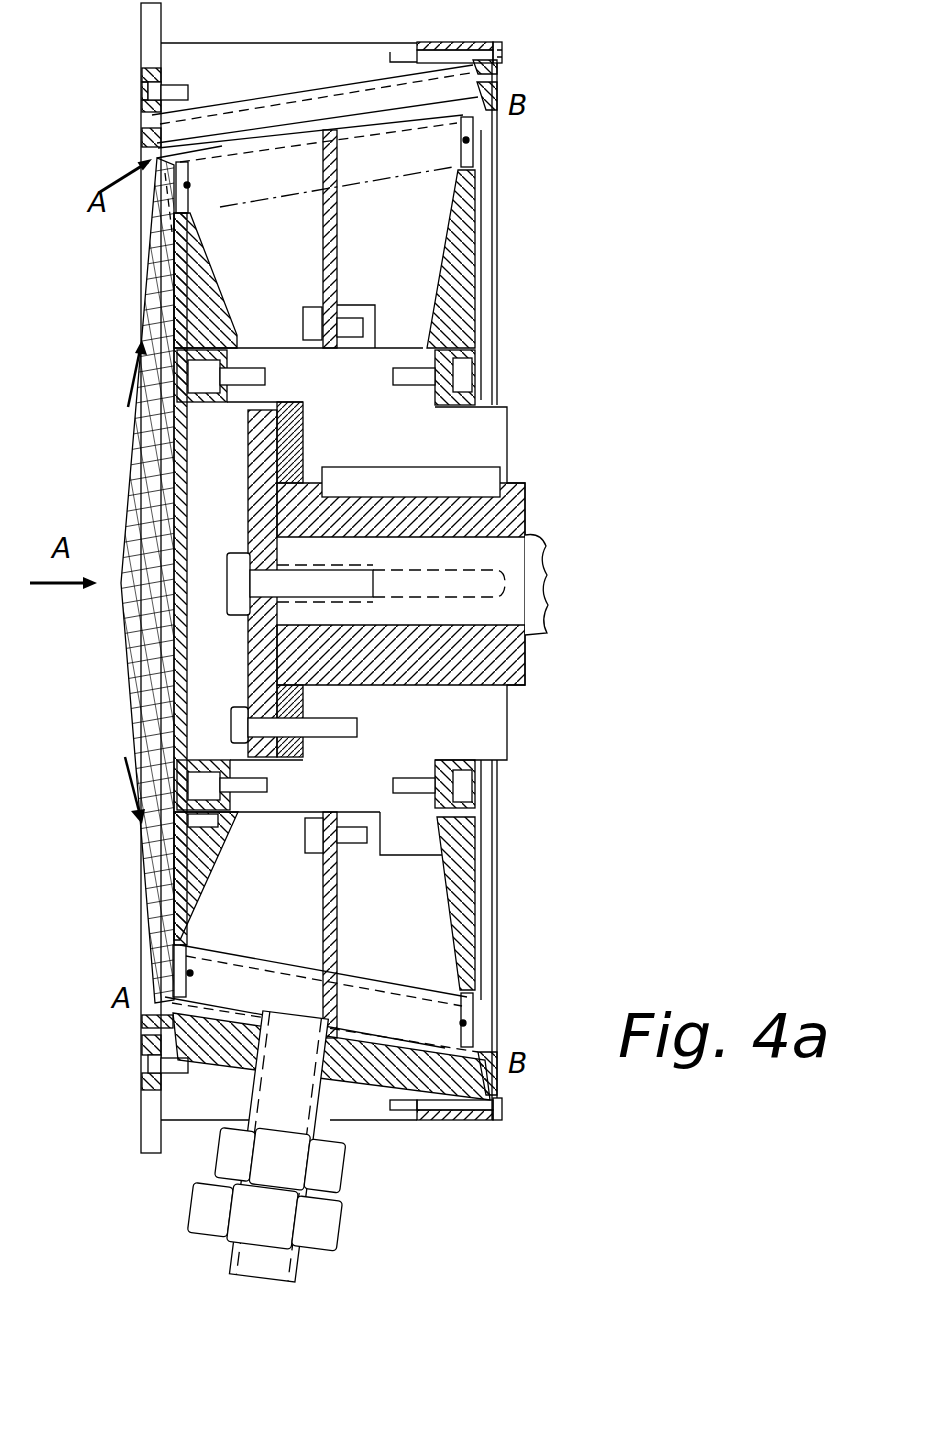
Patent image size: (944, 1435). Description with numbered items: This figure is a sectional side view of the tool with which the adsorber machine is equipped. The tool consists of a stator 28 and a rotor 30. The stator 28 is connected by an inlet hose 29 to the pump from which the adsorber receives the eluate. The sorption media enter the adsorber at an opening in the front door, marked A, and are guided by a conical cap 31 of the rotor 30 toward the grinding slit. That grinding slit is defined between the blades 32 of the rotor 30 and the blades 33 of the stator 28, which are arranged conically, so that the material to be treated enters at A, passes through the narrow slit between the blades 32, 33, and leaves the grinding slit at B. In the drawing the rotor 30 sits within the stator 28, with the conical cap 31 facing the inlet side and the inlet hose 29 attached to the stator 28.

The stator 28 is at (254, 578).
The inlet hose 29 is at (285, 1146).
The rotor 30 is at (323, 580).
The conical cap 31 is at (131, 580).
The blades of the rotor 32 is at (312, 581).
The blades of the stator 33 is at (321, 582).